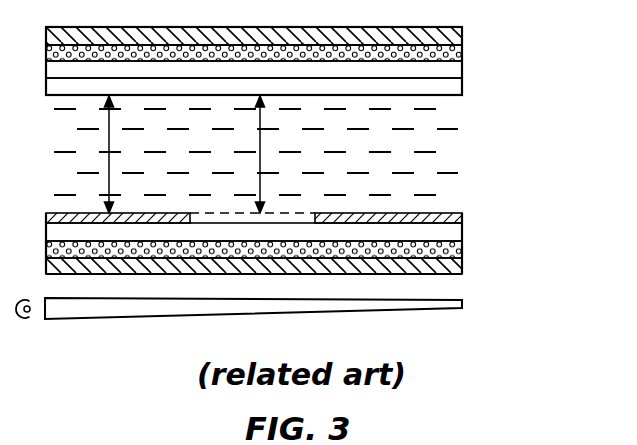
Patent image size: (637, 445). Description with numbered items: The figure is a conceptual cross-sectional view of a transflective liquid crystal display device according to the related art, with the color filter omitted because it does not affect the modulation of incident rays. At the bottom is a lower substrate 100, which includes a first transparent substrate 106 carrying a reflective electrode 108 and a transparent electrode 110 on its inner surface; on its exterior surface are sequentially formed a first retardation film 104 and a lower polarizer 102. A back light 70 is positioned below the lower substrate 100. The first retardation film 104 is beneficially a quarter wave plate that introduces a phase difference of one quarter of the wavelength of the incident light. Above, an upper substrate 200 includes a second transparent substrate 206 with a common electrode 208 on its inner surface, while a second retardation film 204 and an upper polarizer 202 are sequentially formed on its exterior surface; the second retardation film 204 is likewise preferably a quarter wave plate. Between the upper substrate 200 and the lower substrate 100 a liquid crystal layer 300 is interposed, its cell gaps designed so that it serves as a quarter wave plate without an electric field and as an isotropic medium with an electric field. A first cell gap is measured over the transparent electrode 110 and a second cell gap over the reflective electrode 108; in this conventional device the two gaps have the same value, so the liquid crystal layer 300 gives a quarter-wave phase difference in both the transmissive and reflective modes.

The back light 70 is at (463, 303).
The lower substrate 100 is at (322, 222).
The lower polarizer 102 is at (463, 266).
The first retardation film 104 is at (463, 249).
The first transparent substrate 106 is at (463, 232).
The reflective electrode 108 is at (463, 218).
The transparent electrode 110 is at (287, 219).
The upper substrate 200 is at (322, 67).
The upper polarizer 202 is at (463, 36).
The second retardation film 204 is at (463, 53).
The second transparent substrate 206 is at (463, 70).
The common electrode 208 is at (463, 88).
The liquid crystal layer 300 is at (470, 104).